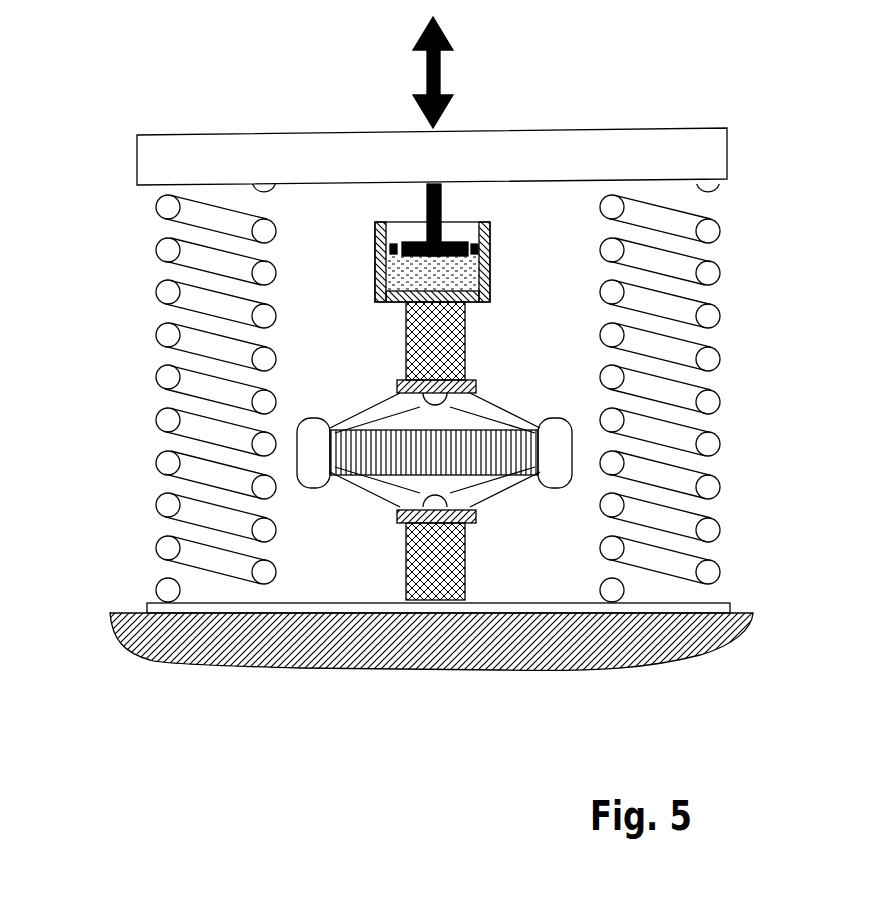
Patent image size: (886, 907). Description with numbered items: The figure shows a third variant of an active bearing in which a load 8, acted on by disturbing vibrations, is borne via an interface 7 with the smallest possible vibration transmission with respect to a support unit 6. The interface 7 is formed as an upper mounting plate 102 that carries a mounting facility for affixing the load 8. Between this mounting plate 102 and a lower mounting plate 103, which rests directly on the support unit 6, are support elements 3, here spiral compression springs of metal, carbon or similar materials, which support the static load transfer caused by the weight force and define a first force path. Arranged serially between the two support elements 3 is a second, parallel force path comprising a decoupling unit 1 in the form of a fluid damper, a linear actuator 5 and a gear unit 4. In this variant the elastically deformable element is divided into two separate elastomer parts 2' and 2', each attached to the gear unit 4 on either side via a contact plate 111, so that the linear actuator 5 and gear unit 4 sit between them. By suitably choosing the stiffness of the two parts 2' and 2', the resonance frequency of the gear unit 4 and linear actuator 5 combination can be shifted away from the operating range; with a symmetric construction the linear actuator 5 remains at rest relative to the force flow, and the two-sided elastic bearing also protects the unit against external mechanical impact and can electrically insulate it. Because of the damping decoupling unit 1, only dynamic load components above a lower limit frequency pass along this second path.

The decoupling unit 1 is at (378, 272).
The elastically deformable element 2' is at (482, 451).
The support element 3 is at (157, 336).
The gear unit 4 is at (375, 405).
The linear actuator 5 is at (372, 460).
The support unit 6 is at (227, 660).
The interface 7 is at (160, 133).
The load 8 is at (453, 72).
The mounting plate 102 is at (454, 125).
The lower mounting plate 103 is at (158, 610).
The contact plate 111 is at (478, 385).